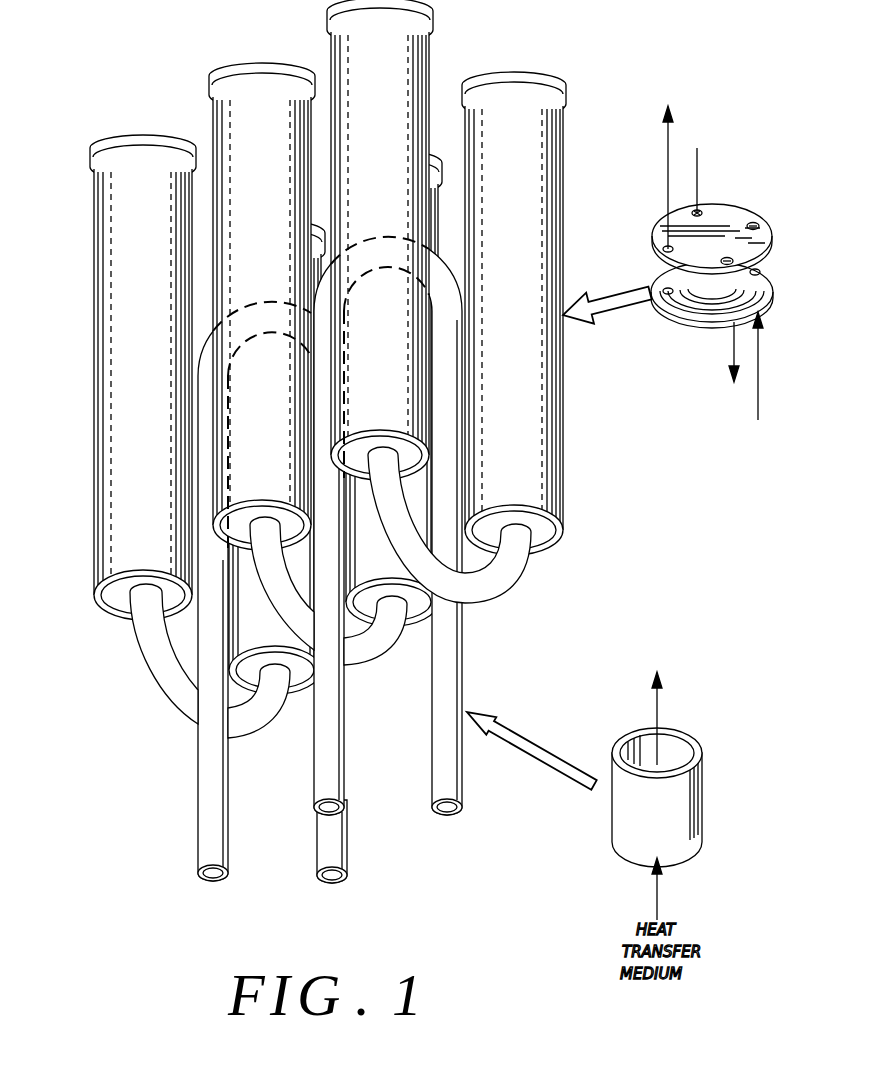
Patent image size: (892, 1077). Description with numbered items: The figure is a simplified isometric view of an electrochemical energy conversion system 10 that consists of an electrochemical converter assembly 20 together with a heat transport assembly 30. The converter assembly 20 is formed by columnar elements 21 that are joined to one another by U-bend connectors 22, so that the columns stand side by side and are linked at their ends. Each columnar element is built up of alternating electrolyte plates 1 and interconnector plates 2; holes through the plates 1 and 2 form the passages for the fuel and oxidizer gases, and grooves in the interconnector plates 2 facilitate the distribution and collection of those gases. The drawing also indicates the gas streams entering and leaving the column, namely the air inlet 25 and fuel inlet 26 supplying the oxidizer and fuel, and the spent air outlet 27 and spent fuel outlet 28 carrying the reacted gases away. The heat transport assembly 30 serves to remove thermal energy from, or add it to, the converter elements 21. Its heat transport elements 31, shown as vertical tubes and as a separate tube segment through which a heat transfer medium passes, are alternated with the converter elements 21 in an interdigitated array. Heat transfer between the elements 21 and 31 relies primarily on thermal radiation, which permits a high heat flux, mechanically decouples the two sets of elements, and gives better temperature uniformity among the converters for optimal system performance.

The electrolyte plate 1 is at (765, 226).
The interconnector plate 2 is at (770, 285).
The electrochemical energy conversion system 10 is at (78, 376).
The electrochemical converter assembly 20 is at (322, 188).
The columnar element 21 is at (413, 55).
The U-bend connector 22 is at (510, 588).
The air inlet 25 is at (697, 166).
The fuel inlet 26 is at (780, 376).
The spent air outlet 27 is at (725, 381).
The spent fuel outlet 28 is at (669, 128).
The heat transport assembly 30 is at (362, 766).
The heat transport element 31 is at (620, 808).